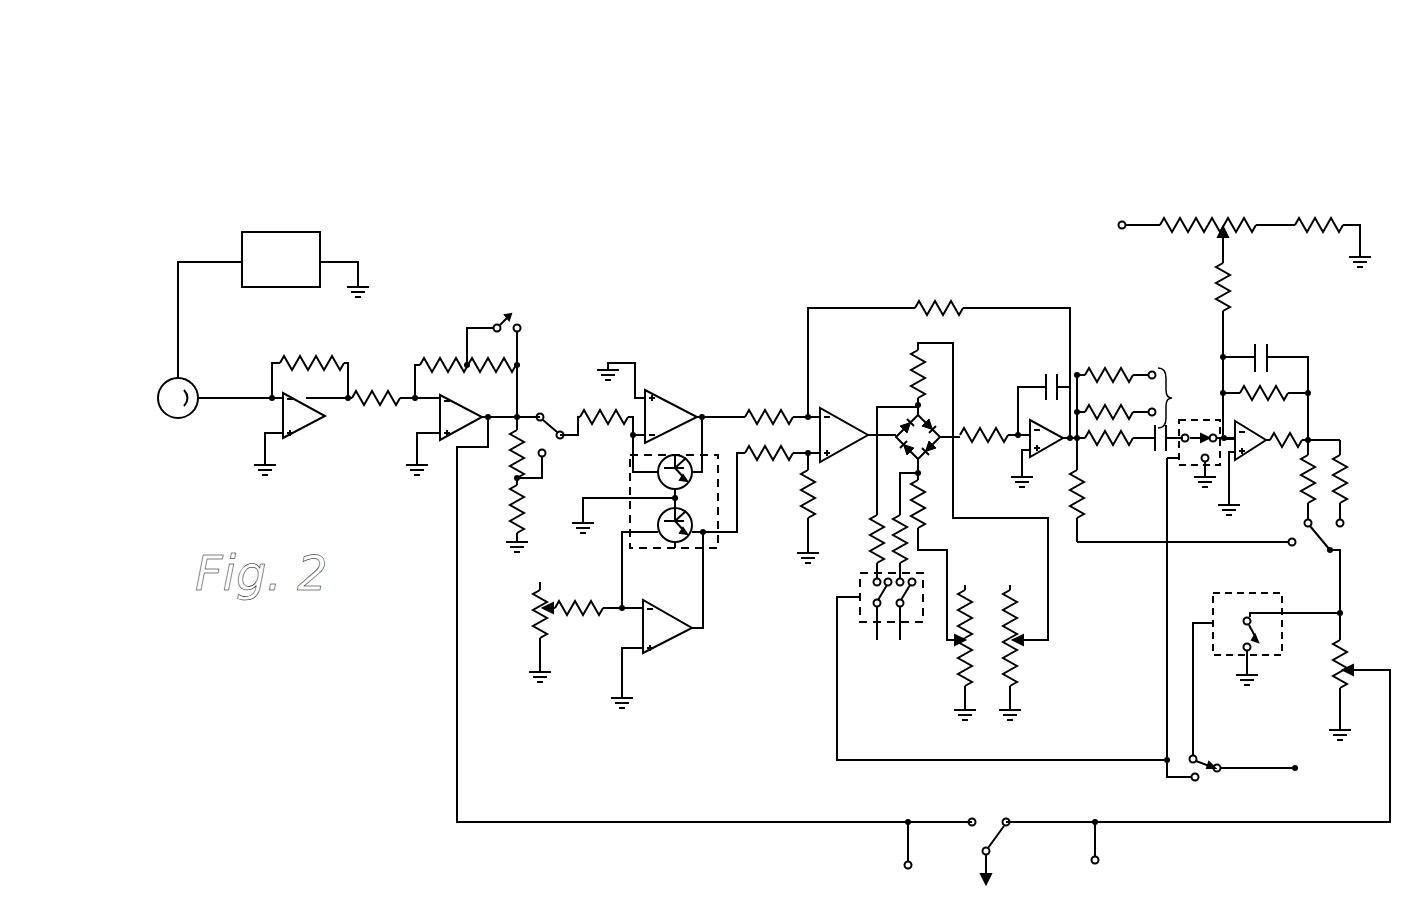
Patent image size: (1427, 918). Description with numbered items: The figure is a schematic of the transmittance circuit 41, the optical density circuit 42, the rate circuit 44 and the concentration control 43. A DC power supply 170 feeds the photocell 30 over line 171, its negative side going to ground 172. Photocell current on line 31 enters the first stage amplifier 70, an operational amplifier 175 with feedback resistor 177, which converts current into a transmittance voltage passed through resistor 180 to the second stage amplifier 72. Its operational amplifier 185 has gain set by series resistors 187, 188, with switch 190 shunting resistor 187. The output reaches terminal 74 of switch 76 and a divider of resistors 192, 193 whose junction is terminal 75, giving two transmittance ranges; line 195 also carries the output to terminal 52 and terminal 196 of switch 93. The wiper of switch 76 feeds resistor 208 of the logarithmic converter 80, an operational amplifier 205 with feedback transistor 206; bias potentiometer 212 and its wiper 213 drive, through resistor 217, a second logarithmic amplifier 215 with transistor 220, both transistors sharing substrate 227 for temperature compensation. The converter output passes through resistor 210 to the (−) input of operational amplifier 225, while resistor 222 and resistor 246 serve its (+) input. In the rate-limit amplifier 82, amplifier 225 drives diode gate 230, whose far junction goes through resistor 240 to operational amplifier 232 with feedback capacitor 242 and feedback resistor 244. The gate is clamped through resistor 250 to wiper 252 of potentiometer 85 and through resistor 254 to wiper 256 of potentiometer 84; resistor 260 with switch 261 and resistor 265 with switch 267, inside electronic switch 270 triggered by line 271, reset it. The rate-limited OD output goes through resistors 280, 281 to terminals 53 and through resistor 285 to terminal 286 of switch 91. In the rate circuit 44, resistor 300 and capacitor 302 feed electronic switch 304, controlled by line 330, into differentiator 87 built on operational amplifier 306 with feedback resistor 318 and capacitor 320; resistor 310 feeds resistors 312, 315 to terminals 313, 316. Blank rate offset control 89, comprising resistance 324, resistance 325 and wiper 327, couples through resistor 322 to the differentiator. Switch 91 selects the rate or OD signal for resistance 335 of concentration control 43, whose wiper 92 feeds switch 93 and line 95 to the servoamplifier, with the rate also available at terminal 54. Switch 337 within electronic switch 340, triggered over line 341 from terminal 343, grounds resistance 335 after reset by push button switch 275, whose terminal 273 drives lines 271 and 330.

The photocell 30 is at (166, 416).
The line 31 is at (239, 394).
The line 171 is at (212, 257).
The DC power supply 170 is at (294, 232).
The ground 172 is at (374, 272).
The first stage amplifier 70 is at (308, 378).
The resistor 177 is at (323, 361).
The operational amplifier 175 is at (300, 439).
The resistor 180 is at (377, 404).
The second stage amplifier 72 is at (454, 373).
The resistor 188 is at (448, 345).
The resistor 187 is at (512, 364).
The switch 190 is at (502, 320).
The operational amplifier 185 is at (472, 408).
The terminal 74 is at (541, 409).
The switch 76 is at (562, 428).
The resistor 192 is at (514, 464).
The terminal 75 is at (546, 454).
The resistor 193 is at (524, 518).
The line 195 is at (457, 690).
The resistor 208 is at (602, 431).
The logarithmic converter 80 is at (676, 400).
The operational amplifier 205 is at (686, 406).
The resistor 210 is at (774, 408).
The feedback transistor 206 is at (690, 462).
The transistor 220 is at (668, 546).
The operational amplifier 215 is at (675, 642).
The thermally conducting substrate 227 is at (731, 548).
The resistor 222 is at (773, 456).
The resistor 246 is at (802, 534).
The potentiometer 212 is at (536, 620).
The wiper 213 is at (558, 616).
The resistor 217 is at (598, 592).
The operational amplifier 225 is at (849, 457).
The rate-limit amplifier 82 is at (903, 401).
The resistor 250 is at (915, 390).
The diode gate 230 is at (935, 422).
The feedback resistor 244 is at (935, 306).
The optical density circuit 42 is at (831, 272).
The resistor 240 is at (985, 418).
The resistor 260 is at (876, 536).
The switch 261 is at (878, 570).
The resistor 254 is at (922, 514).
The resistor 265 is at (935, 547).
The electronic switch 270 is at (858, 600).
The switch 267 is at (914, 586).
The line 271 is at (837, 726).
The wiper 256 is at (954, 650).
The potentiometer 84 is at (955, 698).
The potentiometer 85 is at (1014, 680).
The wiper 252 is at (1050, 632).
The operational amplifier 232 is at (1046, 454).
The capacitor 242 is at (1050, 373).
The resistor 281 is at (1134, 370).
The resistor 280 is at (1115, 415).
The terminals 53 is at (1180, 398).
The resistor 300 is at (1114, 453).
The capacitor 302 is at (1148, 454).
The electronic switch 304 is at (1204, 435).
The resistor 285 is at (1081, 512).
The control line 330 is at (1153, 532).
The terminal 286 is at (1287, 540).
The blank rate offset control 89 is at (1184, 208).
The potentiometer resistance 324 is at (1188, 205).
The resistance 325 is at (1320, 220).
The wiper 327 is at (1218, 242).
The resistor 322 is at (1221, 290).
The rate circuit 44 is at (1306, 310).
The capacitor 320 is at (1275, 350).
The resistor 318 is at (1290, 394).
The differentiator 87 is at (1260, 426).
The operational amplifier 306 is at (1256, 455).
The resistor 310 is at (1300, 440).
The resistor 315 is at (1302, 491).
The terminal 316 is at (1304, 523).
The resistor 312 is at (1342, 488).
The terminal 313 is at (1344, 525).
The switch 91 is at (1342, 518).
The potentiometer resistance 335 is at (1334, 670).
The wiper 92 is at (1366, 674).
The switch 337 is at (1246, 614).
The electronic switch 340 is at (1212, 594).
The trigger line 341 is at (1191, 675).
The terminal 343 is at (1198, 757).
The push button switch 275 is at (1228, 768).
The terminal 273 is at (1200, 783).
The concentration control 43 is at (1301, 715).
The terminal 196 is at (970, 817).
The terminal 52 is at (884, 860).
The switch 93 is at (980, 846).
The line 95 is at (988, 866).
The terminal 54 is at (1106, 870).
The transmittance circuit 41 is at (399, 302).